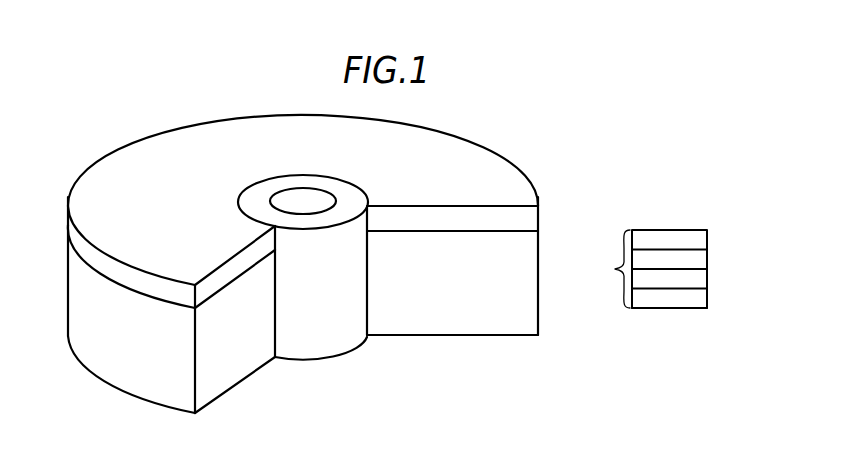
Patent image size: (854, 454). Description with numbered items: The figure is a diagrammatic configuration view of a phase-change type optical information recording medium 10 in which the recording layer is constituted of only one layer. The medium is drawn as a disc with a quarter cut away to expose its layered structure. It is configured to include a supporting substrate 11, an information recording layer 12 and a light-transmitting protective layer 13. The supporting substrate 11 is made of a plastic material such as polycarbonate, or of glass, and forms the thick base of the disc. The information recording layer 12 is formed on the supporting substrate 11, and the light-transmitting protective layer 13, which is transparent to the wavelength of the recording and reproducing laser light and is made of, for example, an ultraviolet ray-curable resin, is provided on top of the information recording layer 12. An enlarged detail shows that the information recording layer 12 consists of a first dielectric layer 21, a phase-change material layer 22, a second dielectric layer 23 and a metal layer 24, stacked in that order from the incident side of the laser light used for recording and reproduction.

The optical information recording medium 10 is at (64, 122).
The supporting substrate 11 is at (510, 328).
The information recording layer 12 is at (517, 229).
The light-transmitting protective layer 13 is at (523, 215).
The first dielectric layer 21 is at (700, 237).
The phase-change material layer 22 is at (700, 257).
The second dielectric layer 23 is at (700, 278).
The metal layer 24 is at (702, 297).